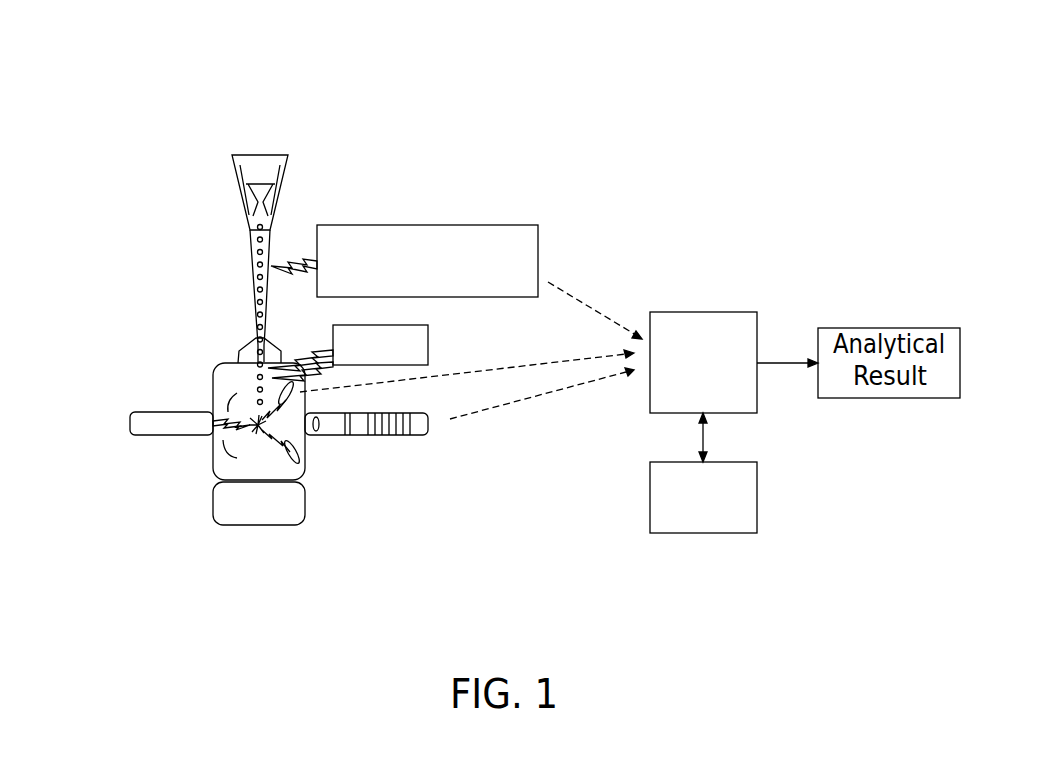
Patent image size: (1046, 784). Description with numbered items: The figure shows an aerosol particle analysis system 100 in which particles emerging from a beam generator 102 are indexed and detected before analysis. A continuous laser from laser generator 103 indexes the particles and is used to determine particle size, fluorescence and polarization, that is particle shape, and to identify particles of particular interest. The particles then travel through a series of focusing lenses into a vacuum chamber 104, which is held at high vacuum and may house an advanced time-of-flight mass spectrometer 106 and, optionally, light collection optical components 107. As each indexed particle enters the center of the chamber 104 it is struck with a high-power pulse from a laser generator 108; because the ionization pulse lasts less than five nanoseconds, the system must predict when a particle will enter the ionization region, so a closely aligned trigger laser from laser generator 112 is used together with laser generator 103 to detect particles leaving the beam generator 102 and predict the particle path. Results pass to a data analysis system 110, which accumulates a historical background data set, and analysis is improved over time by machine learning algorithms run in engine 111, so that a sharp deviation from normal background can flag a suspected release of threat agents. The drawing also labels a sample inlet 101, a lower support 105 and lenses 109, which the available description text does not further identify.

The particle analysis system 100 is at (308, 48).
The sample funnel / hopper 101 is at (288, 160).
The beam generator 102 is at (252, 282).
The laser generator 103 is at (455, 225).
The vacuum chamber 104 is at (213, 467).
The base / support 105 is at (265, 527).
The time-of-flight mass spectrometer 106 is at (416, 436).
The light collection optical components 107 is at (213, 405).
The laser generator 108 is at (130, 424).
The collection lenses 109 is at (290, 400).
The data analysis system 110 is at (697, 312).
The engine 111 is at (703, 533).
The laser generator 112 is at (428, 342).